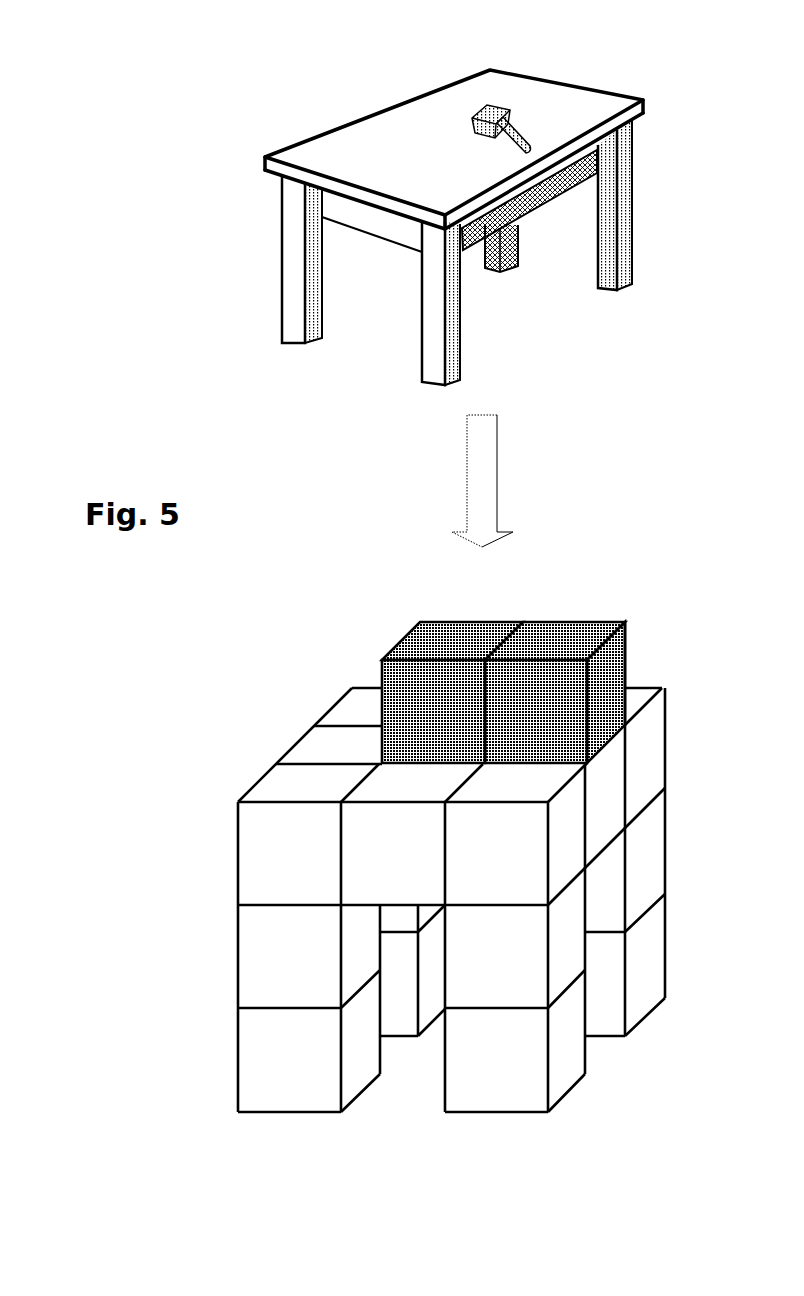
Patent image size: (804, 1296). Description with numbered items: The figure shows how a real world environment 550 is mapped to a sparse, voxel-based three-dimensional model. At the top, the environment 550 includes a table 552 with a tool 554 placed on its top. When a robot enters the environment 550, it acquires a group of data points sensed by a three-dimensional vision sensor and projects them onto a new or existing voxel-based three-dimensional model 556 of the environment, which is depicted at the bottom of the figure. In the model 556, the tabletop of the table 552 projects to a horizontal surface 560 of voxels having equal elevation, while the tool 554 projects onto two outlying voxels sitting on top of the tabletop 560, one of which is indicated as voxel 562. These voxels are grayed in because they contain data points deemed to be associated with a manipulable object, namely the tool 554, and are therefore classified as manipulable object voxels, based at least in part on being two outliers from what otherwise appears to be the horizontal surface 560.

The environment 550 is at (180, 98).
The table 552 is at (593, 105).
The tool 554 is at (481, 108).
The voxel-based 3D model 556 is at (220, 730).
The horizontal surface 560 is at (360, 707).
The second highlighted block 562 is at (578, 637).